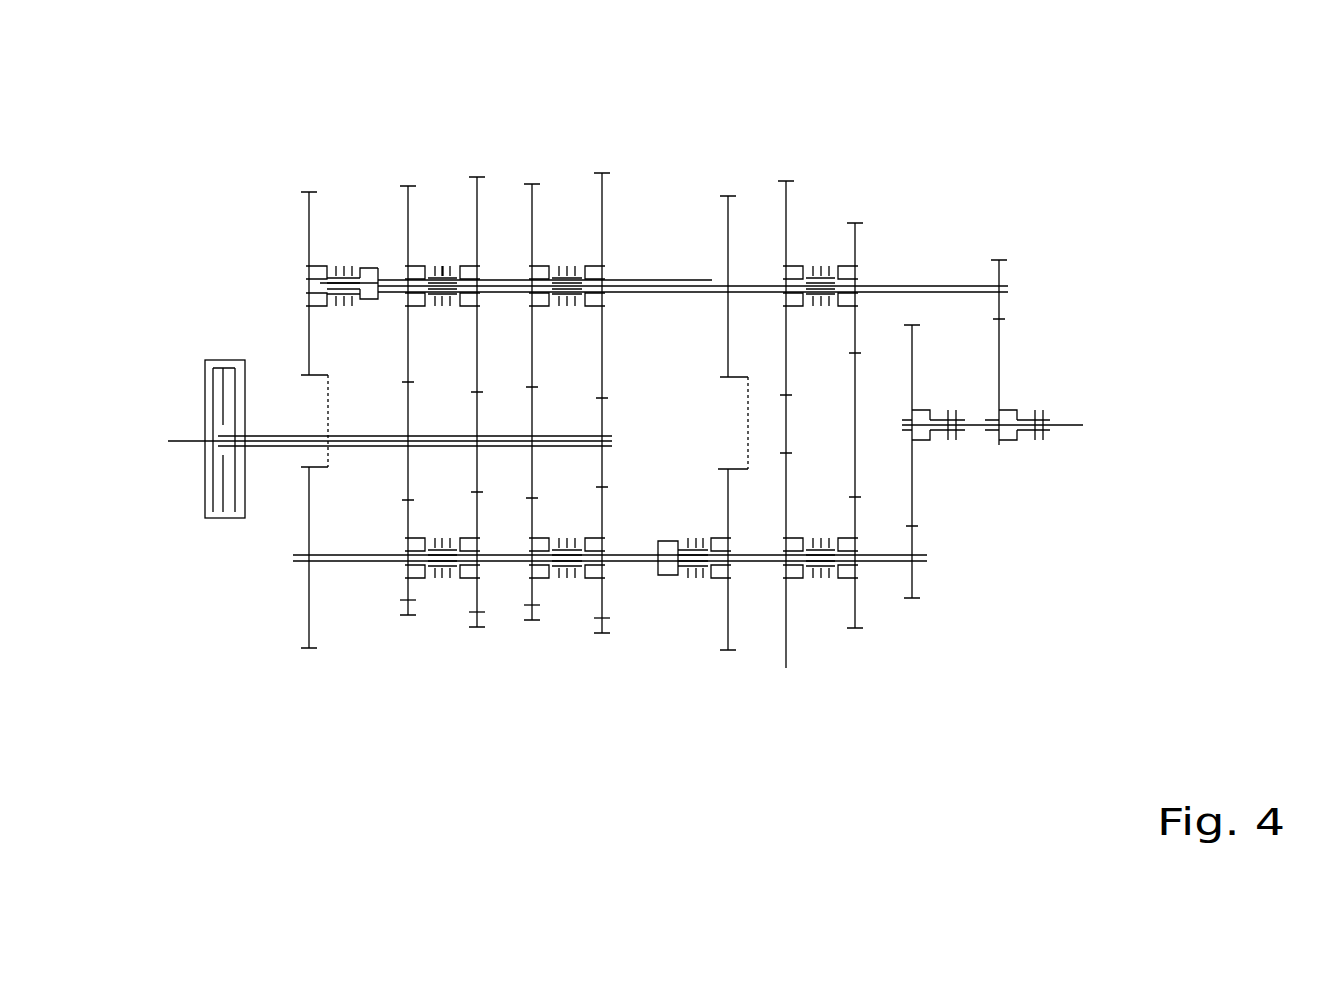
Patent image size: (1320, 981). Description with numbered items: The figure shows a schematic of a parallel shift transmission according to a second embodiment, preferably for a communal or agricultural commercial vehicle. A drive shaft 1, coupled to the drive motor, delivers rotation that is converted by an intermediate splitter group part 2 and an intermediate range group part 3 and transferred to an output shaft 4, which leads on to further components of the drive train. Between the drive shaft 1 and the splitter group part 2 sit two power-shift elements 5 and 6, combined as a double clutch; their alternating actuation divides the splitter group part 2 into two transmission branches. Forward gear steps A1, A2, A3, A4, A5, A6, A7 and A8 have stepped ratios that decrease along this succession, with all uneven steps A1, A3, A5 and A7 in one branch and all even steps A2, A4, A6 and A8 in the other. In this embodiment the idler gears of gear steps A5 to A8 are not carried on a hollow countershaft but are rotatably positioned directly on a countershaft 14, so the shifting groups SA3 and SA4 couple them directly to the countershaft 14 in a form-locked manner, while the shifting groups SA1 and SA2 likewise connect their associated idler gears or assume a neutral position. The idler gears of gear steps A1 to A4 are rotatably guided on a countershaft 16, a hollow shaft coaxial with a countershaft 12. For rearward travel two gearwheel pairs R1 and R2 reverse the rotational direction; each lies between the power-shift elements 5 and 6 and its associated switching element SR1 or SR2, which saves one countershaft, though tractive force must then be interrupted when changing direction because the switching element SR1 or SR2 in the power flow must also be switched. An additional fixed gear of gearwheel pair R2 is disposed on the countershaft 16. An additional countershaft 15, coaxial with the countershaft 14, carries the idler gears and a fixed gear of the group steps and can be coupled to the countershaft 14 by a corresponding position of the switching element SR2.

The drive shaft 1 is at (178, 444).
The splitter group part 2 is at (393, 113).
The range group part 3 is at (903, 172).
The output shaft 4 is at (1065, 420).
The power-shift element 5 is at (221, 520).
The power-shift element 6 is at (243, 520).
The countershaft 12 is at (885, 290).
The countershaft 14 is at (372, 558).
The additional countershaft 15 is at (765, 565).
The countershaft 16 is at (652, 277).
The gearwheel pair R1 is at (305, 245).
The gearwheel pair R2 is at (726, 190).
The gear step A1 is at (604, 162).
The gear step A2 is at (475, 168).
The gear step A3 is at (531, 177).
The gear step A4 is at (400, 182).
The gear step A5 is at (603, 645).
The gear step A6 is at (475, 638).
The gear step A7 is at (532, 630).
The gear step A8 is at (406, 627).
The shifting group SA1 is at (568, 250).
The shifting group SA2 is at (443, 250).
The shifting group SA3 is at (565, 595).
The shifting group SA4 is at (445, 592).
The switching element SR1 is at (345, 246).
The switching element SR2 is at (692, 592).